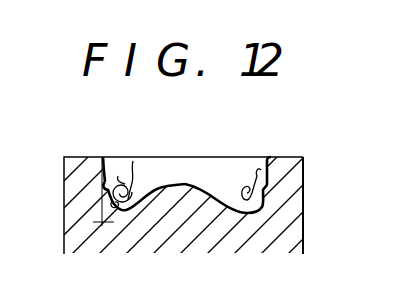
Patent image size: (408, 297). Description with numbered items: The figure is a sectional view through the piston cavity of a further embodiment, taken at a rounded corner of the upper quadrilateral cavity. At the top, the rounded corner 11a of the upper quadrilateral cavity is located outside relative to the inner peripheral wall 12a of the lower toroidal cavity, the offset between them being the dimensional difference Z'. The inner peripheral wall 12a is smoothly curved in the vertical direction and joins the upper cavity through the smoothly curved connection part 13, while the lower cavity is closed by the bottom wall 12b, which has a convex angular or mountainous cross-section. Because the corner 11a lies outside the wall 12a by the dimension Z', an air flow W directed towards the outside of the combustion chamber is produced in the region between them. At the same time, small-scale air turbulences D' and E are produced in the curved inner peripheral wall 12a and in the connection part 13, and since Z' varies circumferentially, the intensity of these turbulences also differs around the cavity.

The connection part 13 is at (103, 183).
The rounded corner 11a is at (103, 157).
The inner peripheral wall 12a is at (116, 208).
The bottom wall 12b is at (141, 204).
The air turbulence D' is at (187, 164).
The air flow W is at (133, 161).
The air turbulence E is at (130, 203).
The dimensional difference Z' is at (97, 201).